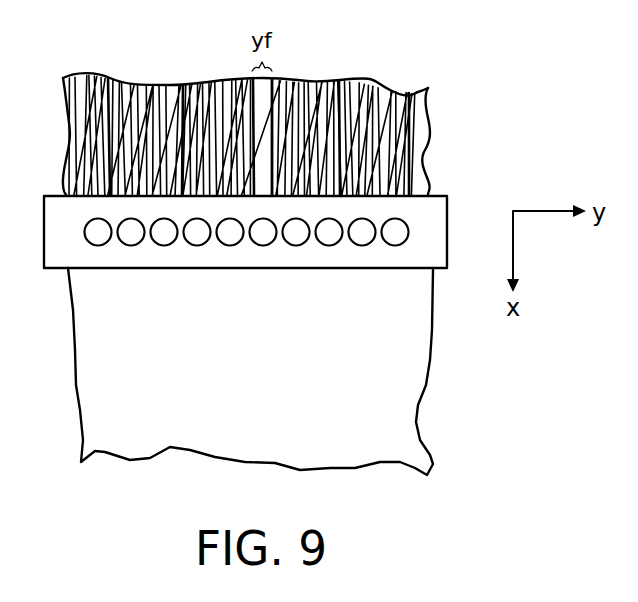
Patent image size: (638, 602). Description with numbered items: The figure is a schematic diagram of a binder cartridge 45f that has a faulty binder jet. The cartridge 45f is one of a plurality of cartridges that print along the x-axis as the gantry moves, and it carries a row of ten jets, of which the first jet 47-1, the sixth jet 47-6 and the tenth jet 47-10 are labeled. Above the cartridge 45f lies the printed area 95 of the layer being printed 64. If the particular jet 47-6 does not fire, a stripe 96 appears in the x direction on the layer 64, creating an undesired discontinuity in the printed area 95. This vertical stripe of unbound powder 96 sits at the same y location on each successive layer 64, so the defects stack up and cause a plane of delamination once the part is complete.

The printed area 95 is at (157, 60).
The stripe of unbound powder 96 is at (259, 92).
The binder cartridge 45f is at (437, 208).
The binder jet 47-1 is at (98, 246).
The faulty binder jet 47-6 is at (263, 246).
The binder jet 47-10 is at (390, 246).
The layer being printed 64 is at (408, 421).